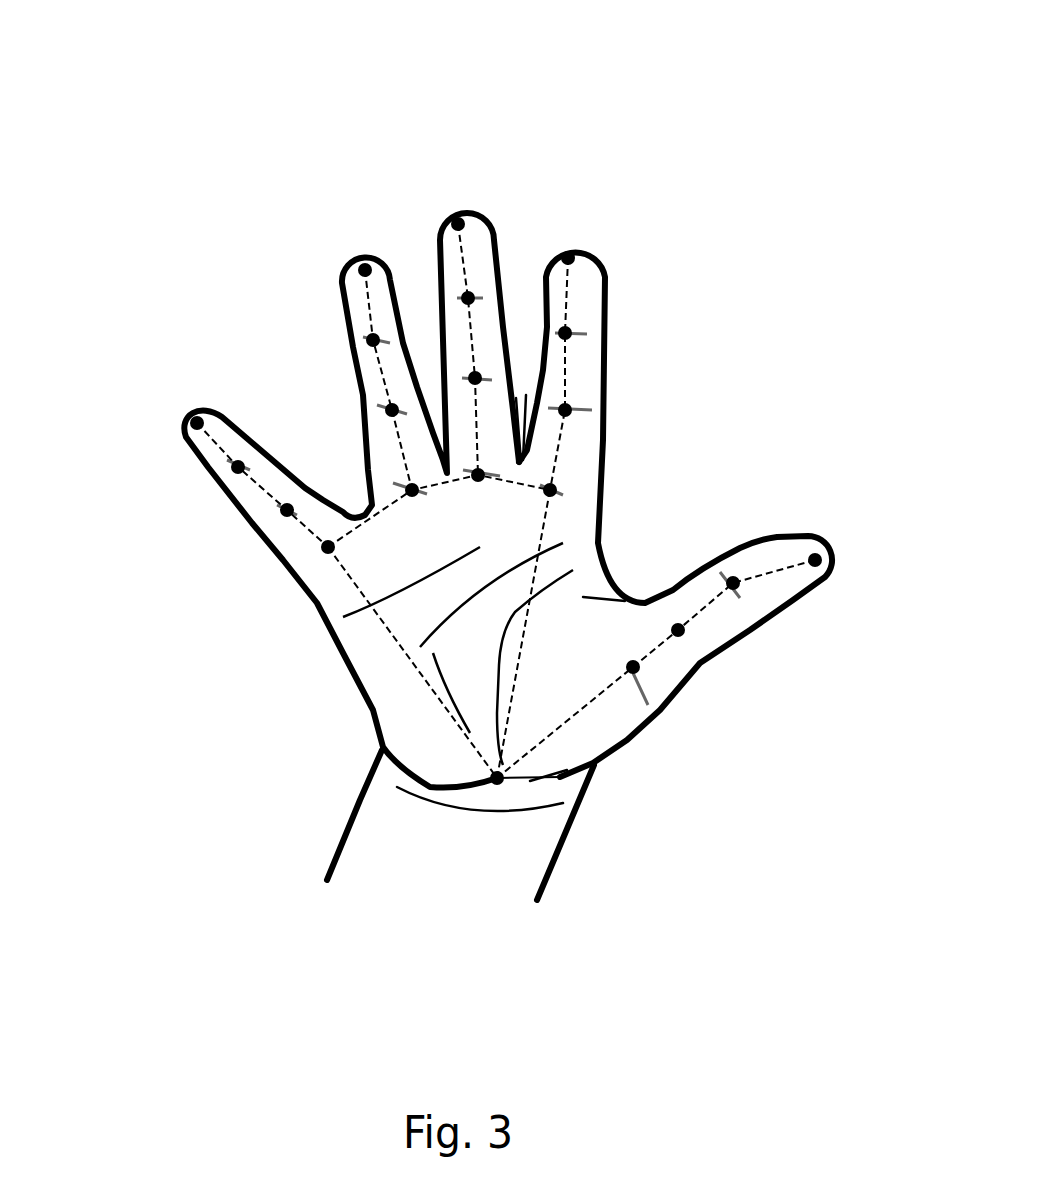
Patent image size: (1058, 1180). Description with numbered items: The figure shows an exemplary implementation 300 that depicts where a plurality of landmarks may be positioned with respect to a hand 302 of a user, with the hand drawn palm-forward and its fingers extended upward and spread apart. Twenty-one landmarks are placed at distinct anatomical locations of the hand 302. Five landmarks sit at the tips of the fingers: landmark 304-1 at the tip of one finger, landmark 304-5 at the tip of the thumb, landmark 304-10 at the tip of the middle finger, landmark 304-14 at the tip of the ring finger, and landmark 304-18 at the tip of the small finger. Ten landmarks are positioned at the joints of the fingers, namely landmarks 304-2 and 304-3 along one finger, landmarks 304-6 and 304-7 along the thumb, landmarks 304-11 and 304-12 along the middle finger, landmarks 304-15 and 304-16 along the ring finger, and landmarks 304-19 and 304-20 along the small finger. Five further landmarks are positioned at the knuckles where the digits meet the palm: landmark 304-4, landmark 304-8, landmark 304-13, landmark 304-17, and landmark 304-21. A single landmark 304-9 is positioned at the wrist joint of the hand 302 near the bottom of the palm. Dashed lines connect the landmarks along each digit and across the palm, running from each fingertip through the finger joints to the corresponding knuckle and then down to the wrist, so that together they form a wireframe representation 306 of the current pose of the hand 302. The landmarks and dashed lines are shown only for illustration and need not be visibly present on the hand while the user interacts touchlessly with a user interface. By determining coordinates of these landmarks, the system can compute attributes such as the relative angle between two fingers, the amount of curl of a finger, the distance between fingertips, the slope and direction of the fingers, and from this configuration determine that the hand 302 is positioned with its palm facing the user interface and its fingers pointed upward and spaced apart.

The exemplary implementation 300 is at (168, 75).
The hand 302 is at (596, 766).
The wireframe representation 306 is at (393, 638).
The landmark 304-1 is at (568, 258).
The landmark 304-2 is at (565, 333).
The landmark 304-3 is at (565, 410).
The landmark 304-4 is at (550, 490).
The landmark 304-5 is at (815, 560).
The landmark 304-6 is at (733, 583).
The landmark 304-7 is at (678, 630).
The landmark 304-8 is at (633, 667).
The landmark 304-9 is at (497, 778).
The landmark 304-10 is at (458, 224).
The landmark 304-11 is at (468, 298).
The landmark 304-12 is at (475, 378).
The landmark 304-13 is at (478, 475).
The landmark 304-14 is at (365, 270).
The landmark 304-15 is at (373, 340).
The landmark 304-16 is at (392, 410).
The landmark 304-17 is at (412, 490).
The landmark 304-18 is at (197, 423).
The landmark 304-19 is at (238, 467).
The landmark 304-20 is at (287, 510).
The landmark 304-21 is at (328, 547).